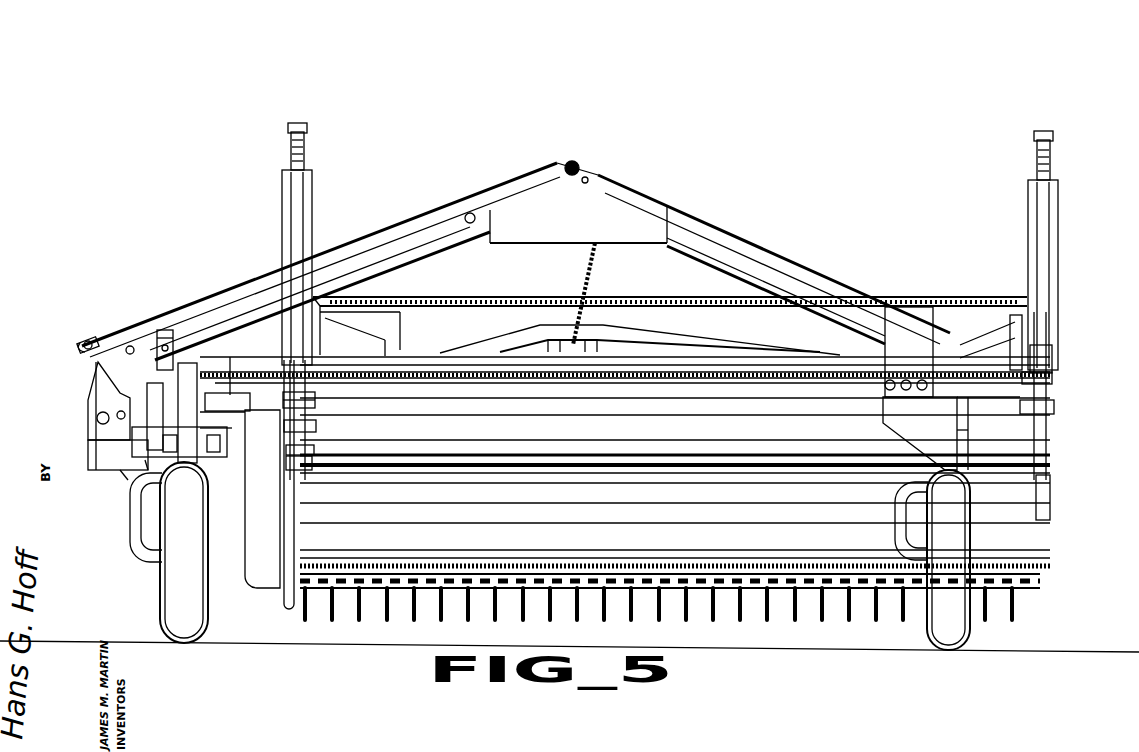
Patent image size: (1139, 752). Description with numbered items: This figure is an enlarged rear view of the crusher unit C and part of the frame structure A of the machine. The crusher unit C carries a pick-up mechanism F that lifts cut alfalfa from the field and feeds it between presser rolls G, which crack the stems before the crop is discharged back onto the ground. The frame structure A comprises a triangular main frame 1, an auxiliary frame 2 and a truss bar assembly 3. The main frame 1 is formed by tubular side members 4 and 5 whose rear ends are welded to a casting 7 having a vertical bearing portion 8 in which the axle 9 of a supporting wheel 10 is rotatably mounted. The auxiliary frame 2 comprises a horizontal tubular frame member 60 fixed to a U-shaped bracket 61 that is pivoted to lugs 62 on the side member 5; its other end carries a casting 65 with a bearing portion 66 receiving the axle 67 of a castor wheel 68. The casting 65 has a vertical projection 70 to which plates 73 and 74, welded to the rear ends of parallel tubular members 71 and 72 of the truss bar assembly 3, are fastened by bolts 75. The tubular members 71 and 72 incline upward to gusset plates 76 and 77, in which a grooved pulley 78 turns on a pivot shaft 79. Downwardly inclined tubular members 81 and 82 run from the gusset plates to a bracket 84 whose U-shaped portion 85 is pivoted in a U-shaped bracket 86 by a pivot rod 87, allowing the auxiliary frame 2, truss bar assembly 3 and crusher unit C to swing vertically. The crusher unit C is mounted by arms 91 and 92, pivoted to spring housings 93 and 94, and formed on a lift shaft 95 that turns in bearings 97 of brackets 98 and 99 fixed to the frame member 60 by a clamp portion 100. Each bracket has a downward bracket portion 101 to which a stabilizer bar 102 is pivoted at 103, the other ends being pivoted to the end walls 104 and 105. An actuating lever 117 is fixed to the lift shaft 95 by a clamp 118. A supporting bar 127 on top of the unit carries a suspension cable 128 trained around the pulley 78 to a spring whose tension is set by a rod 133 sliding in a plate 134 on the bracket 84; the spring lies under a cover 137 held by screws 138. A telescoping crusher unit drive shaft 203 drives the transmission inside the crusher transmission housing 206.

The triangular main frame 1 is at (125, 468).
The auxiliary frame 2 is at (684, 416).
The truss bar assembly 3 is at (548, 188).
The tubular side member 4 is at (112, 436).
The tubular side member 5 is at (227, 448).
The casting 7 is at (205, 460).
The bearing portion 8 is at (227, 402).
The axle 9 is at (138, 525).
The supporting wheel 10 is at (190, 606).
The tubular frame member 60 is at (625, 398).
The U-shaped bracket 61 is at (230, 417).
The lugs 62 is at (227, 430).
The casting 65 is at (920, 433).
The bearing portion 66 is at (980, 432).
The axle 67 is at (905, 490).
The castor wheel 68 is at (955, 648).
The vertical projection 70 is at (988, 432).
The tubular member 71 is at (775, 272).
The tubular member 72 is at (820, 296).
The plate 73 is at (885, 312).
The plate 74 is at (945, 312).
The bolts 75 is at (922, 380).
The gusset plate 76 is at (655, 195).
The gusset plate 77 is at (578, 224).
The grooved pulley 78 is at (570, 162).
The pivot shaft 79 is at (588, 175).
The tubular member 81 is at (455, 245).
The tubular member 82 is at (415, 240).
The bracket 84 is at (95, 380).
The U-shaped portion 85 is at (96, 398).
The U-shaped bracket 86 is at (112, 448).
The pivot rod 87 is at (96, 418).
The arm 91 is at (376, 331).
The arm 92 is at (1024, 330).
The spring housing 93 is at (295, 207).
The spring housing 94 is at (1050, 232).
The lift shaft 95 is at (470, 352).
The bearing 97 is at (1054, 352).
The bracket 98 is at (318, 392).
The bracket 99 is at (1054, 382).
The clamp portion 100 is at (318, 418).
The bracket portion 101 is at (318, 432).
The stabilizer bar 102 is at (312, 465).
The pivot 103 is at (340, 460).
The end wall 104 is at (1050, 494).
The end wall 105 is at (284, 495).
The actuating lever 117 is at (148, 468).
The clamp 118 is at (166, 330).
The supporting bar 127 is at (628, 338).
The suspension cable 128 is at (590, 277).
The rod 133 is at (80, 345).
The plate 134 is at (95, 340).
The cover 137 is at (352, 242).
The screws 138 is at (470, 215).
The crusher unit drive shaft 203 is at (232, 390).
The crusher transmission housing 206 is at (265, 528).
The frame structure A is at (86, 461).
The crusher unit C is at (822, 365).
The pick-up mechanism F is at (780, 622).
The presser rolls G is at (552, 490).